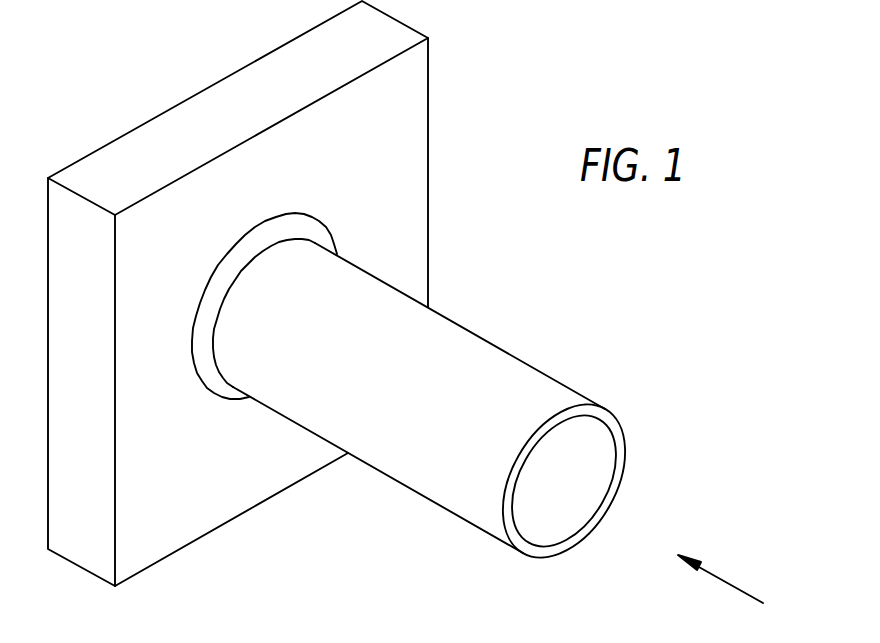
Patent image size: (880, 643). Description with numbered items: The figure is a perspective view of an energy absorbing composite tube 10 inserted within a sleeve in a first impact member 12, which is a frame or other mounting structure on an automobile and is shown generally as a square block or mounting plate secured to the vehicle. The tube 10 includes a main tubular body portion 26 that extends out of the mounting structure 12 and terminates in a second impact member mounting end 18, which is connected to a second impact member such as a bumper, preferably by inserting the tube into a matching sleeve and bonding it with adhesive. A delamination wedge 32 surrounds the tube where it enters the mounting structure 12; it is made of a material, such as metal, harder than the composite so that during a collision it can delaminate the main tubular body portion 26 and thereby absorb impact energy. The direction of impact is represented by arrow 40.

The energy absorbing composite tube 10 is at (399, 293).
The first impact member 12 is at (373, 170).
The second impact member mounting end 18 is at (610, 428).
The main tubular body portion 26 is at (432, 332).
The delamination wedge 32 is at (208, 380).
The arrow 40 is at (730, 582).